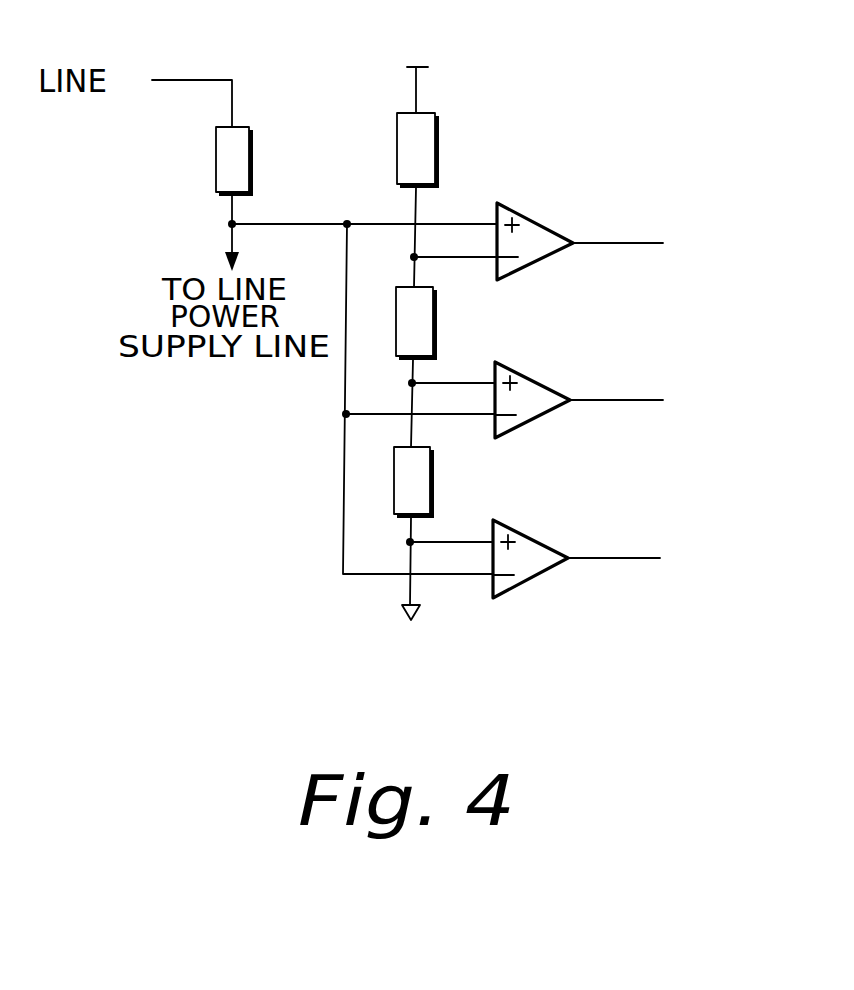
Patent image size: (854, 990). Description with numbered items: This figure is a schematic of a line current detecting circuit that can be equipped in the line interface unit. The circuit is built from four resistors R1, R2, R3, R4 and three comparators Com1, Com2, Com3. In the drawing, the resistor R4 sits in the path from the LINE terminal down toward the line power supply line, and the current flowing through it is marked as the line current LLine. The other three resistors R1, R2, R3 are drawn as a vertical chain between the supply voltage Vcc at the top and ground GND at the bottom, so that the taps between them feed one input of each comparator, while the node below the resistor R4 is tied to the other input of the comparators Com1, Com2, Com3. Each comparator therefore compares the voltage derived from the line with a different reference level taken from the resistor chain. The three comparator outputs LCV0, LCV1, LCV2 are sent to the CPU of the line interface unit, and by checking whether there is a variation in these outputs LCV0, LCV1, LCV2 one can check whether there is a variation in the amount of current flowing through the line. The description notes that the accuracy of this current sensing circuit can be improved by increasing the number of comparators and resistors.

The resistor R1 is at (441, 150).
The resistor R2 is at (440, 323).
The resistor R3 is at (438, 482).
The resistor R4 is at (210, 161).
The line current L_Line LLine is at (299, 161).
The comparator Com1 is at (560, 200).
The comparator Com2 is at (557, 358).
The comparator Com3 is at (553, 516).
The comparator output LCV0 is at (661, 244).
The comparator output LCV1 is at (656, 401).
The comparator output LCV2 is at (656, 561).
The supply voltage Vcc is at (417, 72).
The ground GND is at (409, 632).